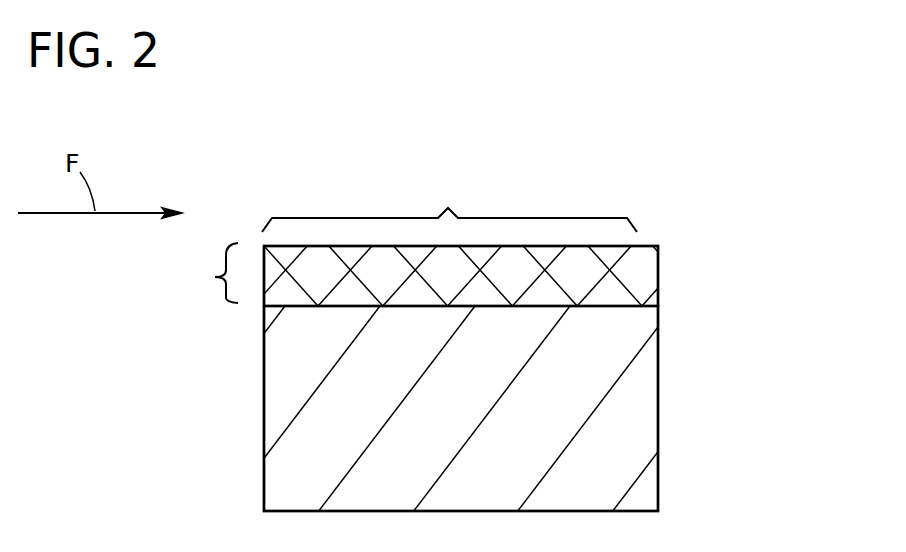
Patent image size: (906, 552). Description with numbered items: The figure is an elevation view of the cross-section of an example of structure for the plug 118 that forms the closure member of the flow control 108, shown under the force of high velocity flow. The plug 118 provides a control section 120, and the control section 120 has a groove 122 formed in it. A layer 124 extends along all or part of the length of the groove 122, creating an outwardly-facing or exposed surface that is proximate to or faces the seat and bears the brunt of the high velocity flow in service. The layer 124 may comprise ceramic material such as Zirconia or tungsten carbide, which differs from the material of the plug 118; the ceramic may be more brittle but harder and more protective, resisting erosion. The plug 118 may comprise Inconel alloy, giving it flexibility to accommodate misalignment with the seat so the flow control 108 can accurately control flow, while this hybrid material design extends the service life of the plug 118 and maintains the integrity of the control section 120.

The flow control 108 is at (676, 180).
The plug 118 is at (613, 399).
The control section 120 is at (449, 205).
The groove 122 is at (201, 273).
The layer 124 is at (658, 275).